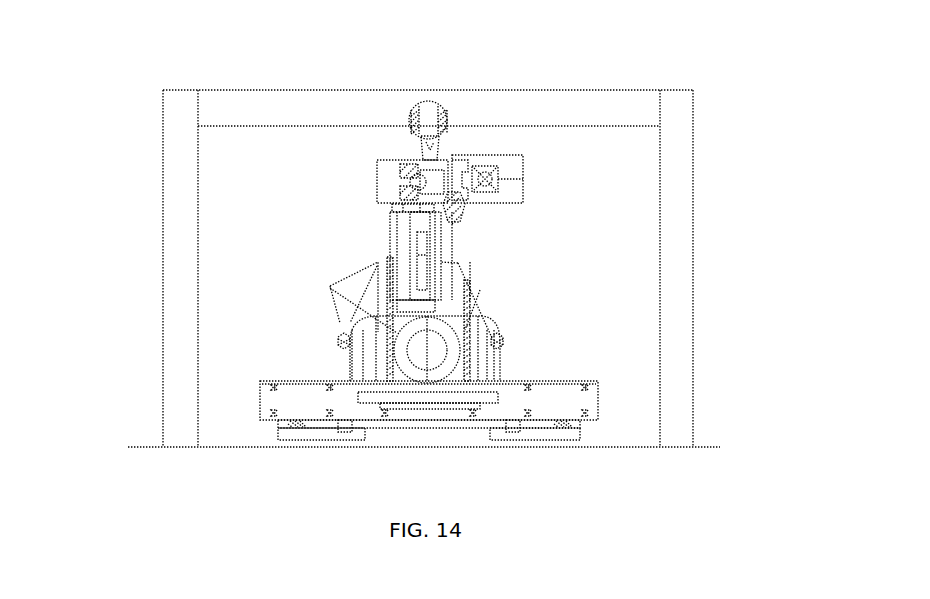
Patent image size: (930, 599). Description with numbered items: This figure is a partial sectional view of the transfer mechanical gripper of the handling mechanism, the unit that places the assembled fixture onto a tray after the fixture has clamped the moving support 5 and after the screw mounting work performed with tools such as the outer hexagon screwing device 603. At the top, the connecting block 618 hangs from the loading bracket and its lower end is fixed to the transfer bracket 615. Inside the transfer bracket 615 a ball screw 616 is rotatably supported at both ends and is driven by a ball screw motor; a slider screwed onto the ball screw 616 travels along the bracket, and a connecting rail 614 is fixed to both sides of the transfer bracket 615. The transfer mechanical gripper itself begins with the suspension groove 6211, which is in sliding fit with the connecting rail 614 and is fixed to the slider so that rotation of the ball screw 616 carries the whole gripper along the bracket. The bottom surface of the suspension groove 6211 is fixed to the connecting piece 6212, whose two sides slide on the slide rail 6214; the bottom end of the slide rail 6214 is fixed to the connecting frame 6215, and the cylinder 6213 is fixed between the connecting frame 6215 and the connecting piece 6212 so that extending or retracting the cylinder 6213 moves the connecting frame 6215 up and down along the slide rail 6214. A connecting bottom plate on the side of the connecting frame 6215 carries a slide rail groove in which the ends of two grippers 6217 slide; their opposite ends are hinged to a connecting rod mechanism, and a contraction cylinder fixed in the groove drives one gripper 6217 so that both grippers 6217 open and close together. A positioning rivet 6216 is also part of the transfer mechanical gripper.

The moving support 5 is at (267, 296).
The outer hexagon screwing device 603 is at (729, 268).
The connecting rail 614 is at (308, 96).
The transfer bracket 615 is at (557, 106).
The ball screw 616 is at (621, 213).
The connecting block 618 is at (482, 74).
The suspension groove 6211 is at (247, 111).
The connecting piece 6212 is at (235, 133).
The cylinder 6213 is at (257, 258).
The slide rail 6214 is at (268, 274).
The connecting frame 6215 is at (321, 372).
The positioning rivet 6216 is at (206, 442).
The gripper 6217 is at (652, 442).